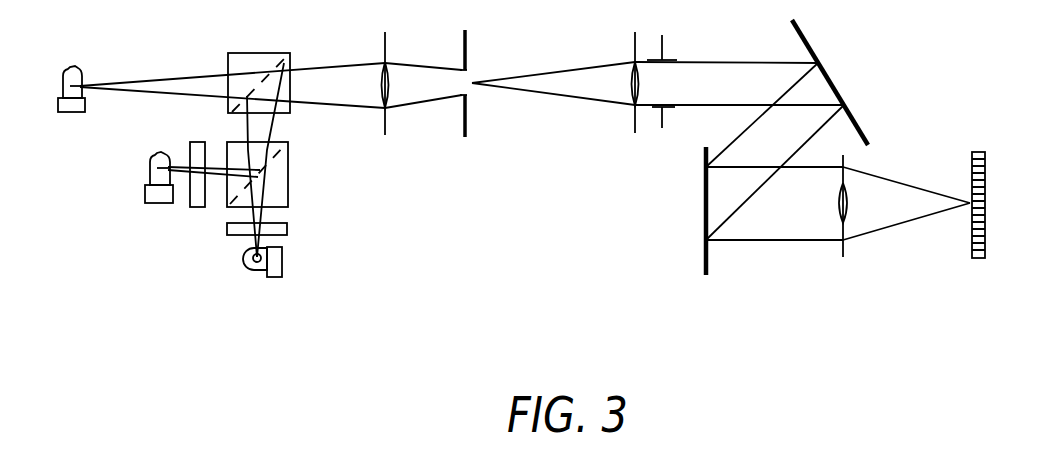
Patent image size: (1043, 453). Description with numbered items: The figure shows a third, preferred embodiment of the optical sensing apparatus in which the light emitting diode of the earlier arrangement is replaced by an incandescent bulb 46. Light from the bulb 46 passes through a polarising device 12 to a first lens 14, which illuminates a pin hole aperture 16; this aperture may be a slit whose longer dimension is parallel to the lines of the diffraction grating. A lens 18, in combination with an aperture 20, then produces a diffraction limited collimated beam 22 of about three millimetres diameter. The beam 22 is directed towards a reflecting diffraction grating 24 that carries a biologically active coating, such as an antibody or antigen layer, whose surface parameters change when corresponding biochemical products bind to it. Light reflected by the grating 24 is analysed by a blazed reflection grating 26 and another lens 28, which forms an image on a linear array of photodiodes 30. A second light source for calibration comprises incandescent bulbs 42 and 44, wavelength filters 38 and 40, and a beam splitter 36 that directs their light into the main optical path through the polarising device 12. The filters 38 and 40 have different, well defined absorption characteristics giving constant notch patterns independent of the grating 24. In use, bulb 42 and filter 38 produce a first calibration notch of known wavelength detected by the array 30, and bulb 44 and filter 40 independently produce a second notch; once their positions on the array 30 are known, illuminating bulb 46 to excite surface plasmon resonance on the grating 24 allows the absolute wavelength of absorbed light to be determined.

The polarising device 12 is at (258, 52).
The first lens 14 is at (387, 50).
The pin hole aperture 16 is at (468, 44).
The lens 18 is at (633, 50).
The aperture 20 is at (665, 58).
The collimated beam 22 is at (757, 62).
The reflecting diffraction grating 24 is at (813, 53).
The blazed reflection grating 26 is at (705, 253).
The lens 28 is at (845, 252).
The linear array of photodiodes 30 is at (986, 170).
The beam splitter 36 is at (290, 178).
The wavelength filter 38 is at (288, 229).
The wavelength filter 40 is at (192, 141).
The incandescent bulb 42 is at (256, 272).
The incandescent bulb 44 is at (148, 176).
The incandescent bulb 46 is at (58, 82).